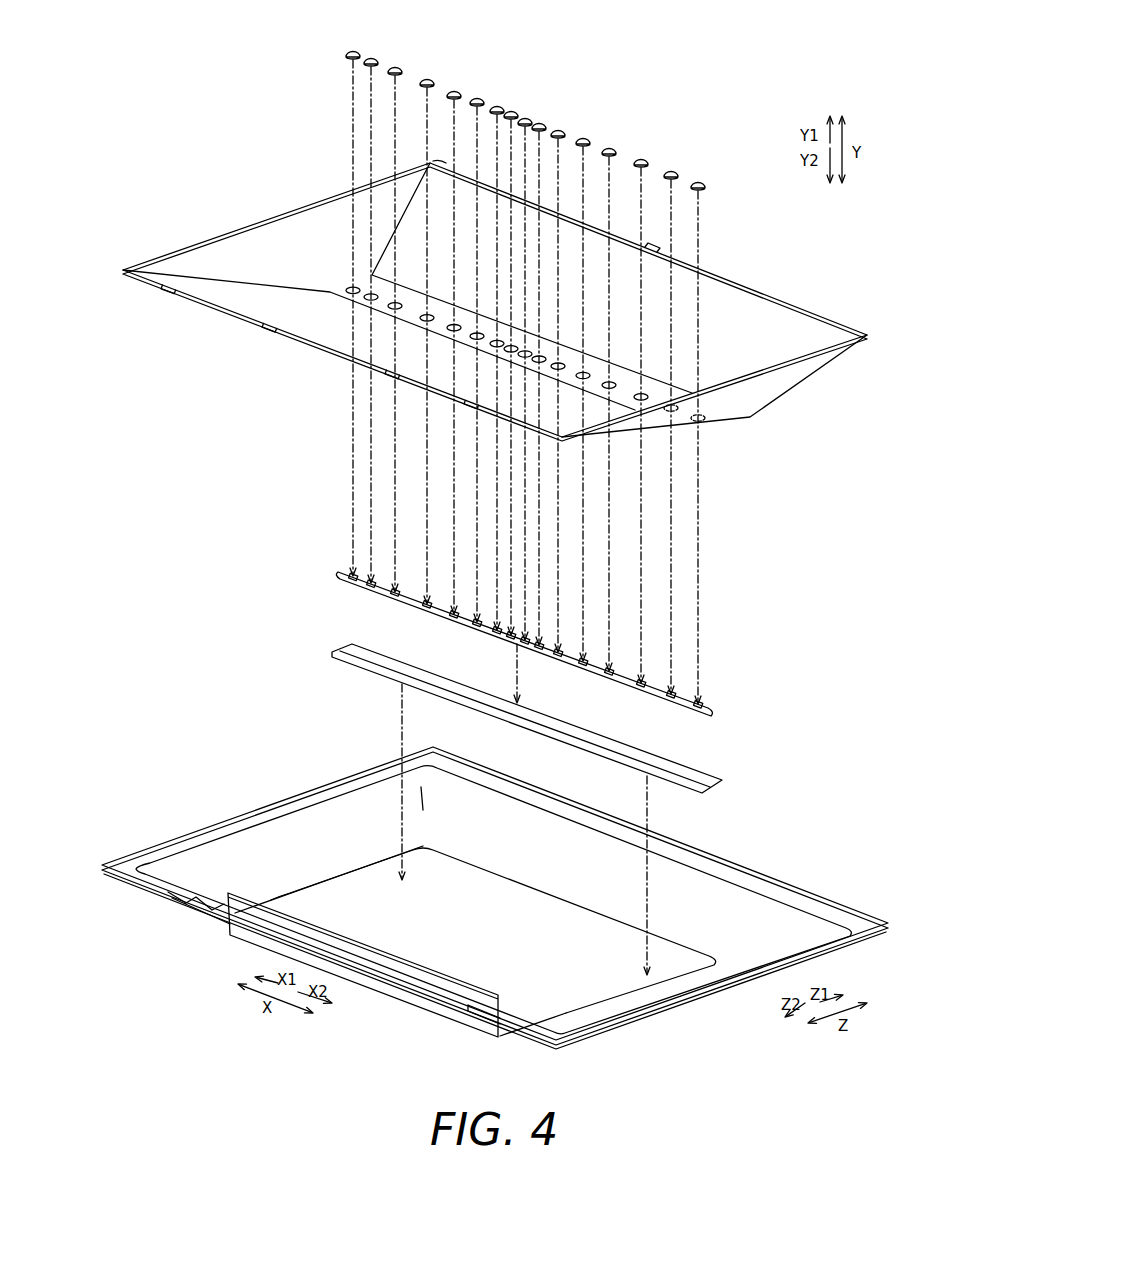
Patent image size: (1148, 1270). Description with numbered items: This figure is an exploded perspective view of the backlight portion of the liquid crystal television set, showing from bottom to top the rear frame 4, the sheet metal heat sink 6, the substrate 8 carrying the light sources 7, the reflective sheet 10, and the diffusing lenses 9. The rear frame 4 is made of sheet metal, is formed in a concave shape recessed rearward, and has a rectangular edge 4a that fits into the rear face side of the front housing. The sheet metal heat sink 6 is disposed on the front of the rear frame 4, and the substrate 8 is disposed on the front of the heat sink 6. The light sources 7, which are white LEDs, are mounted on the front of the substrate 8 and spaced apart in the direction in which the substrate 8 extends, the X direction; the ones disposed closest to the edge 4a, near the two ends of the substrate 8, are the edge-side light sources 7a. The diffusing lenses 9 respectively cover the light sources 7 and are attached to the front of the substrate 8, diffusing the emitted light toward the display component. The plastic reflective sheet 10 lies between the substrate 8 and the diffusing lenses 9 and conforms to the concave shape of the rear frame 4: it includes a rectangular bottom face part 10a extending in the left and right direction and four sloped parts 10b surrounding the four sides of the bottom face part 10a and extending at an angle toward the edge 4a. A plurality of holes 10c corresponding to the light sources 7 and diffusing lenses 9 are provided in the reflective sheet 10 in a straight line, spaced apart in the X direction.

The rear frame 4 is at (767, 857).
The rectangular edge 4a is at (818, 904).
The sheet metal heat sink 6 is at (706, 780).
The light sources 7 is at (368, 585).
The edge-side light sources 7a is at (345, 579).
The substrate 8 is at (720, 706).
The diffusing lenses 9 is at (355, 50).
The reflective sheet 10 is at (837, 300).
The bottom face part 10a is at (348, 283).
The sloped parts 10b is at (303, 231).
The holes 10c is at (345, 291).